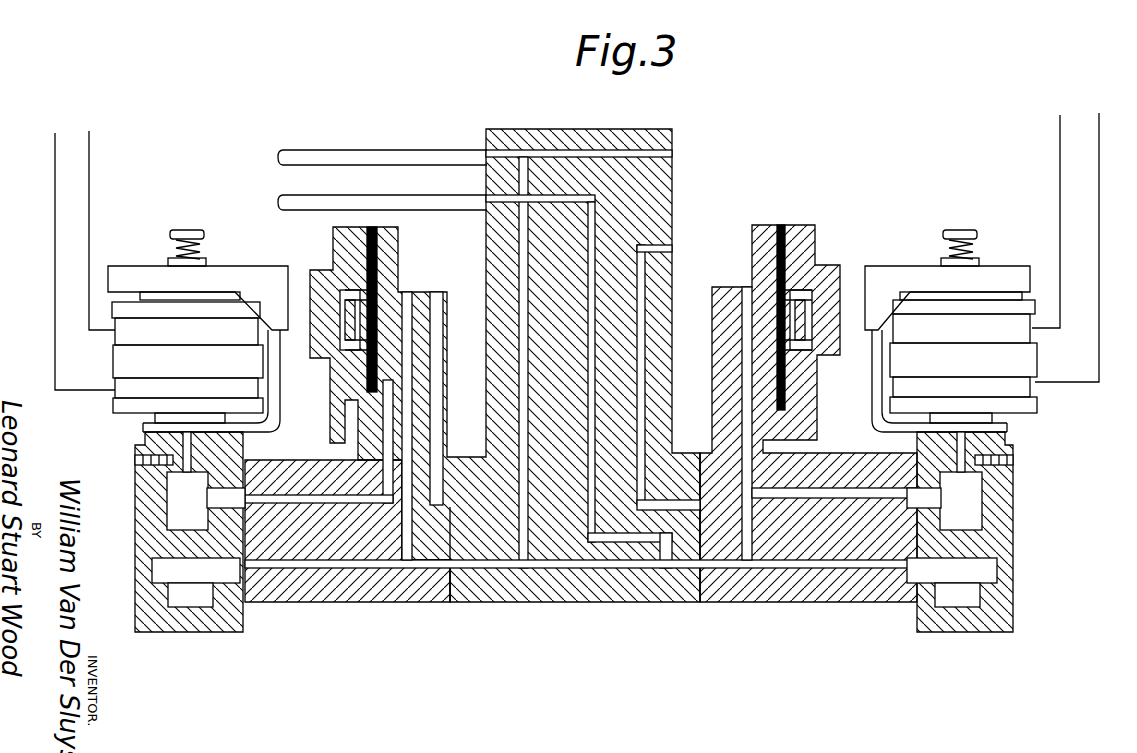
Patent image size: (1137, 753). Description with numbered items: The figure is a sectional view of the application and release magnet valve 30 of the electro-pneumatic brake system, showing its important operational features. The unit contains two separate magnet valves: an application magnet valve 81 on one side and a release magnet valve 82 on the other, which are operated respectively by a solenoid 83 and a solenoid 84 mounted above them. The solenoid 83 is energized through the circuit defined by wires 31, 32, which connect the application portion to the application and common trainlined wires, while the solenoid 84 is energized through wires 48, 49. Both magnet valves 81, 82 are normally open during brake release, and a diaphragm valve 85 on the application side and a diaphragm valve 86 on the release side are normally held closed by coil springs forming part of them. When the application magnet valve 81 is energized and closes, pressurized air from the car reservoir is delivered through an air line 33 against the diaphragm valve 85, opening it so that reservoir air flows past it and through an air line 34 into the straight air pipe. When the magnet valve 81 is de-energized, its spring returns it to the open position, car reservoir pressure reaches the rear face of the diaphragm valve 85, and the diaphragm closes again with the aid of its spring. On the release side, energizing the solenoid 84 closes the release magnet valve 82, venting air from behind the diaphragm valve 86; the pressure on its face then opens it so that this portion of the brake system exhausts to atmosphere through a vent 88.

The application and release magnet valve 30 is at (779, 165).
The wire 31 is at (55, 193).
The wire 32 is at (91, 187).
The air line 33 is at (447, 211).
The air line 34 is at (405, 158).
The wire 48 is at (1100, 210).
The wire 49 is at (1060, 185).
The application magnet valve 81 is at (160, 500).
The release magnet valve 82 is at (1000, 493).
The solenoid 83 is at (112, 410).
The solenoid 84 is at (1040, 403).
The diaphragm valve 85 is at (397, 297).
The diaphragm valve 86 is at (770, 310).
The vent 88 is at (667, 248).